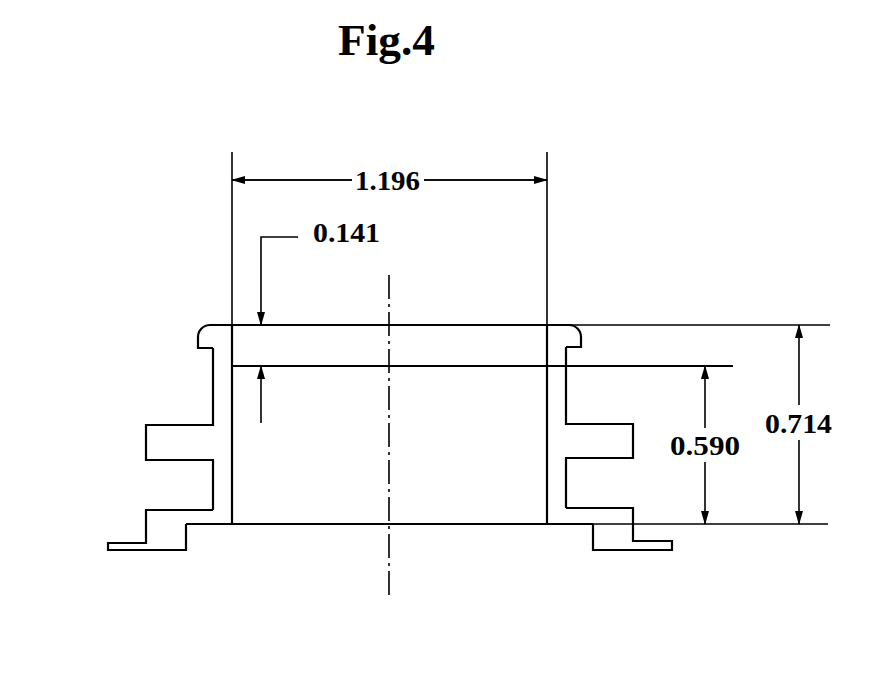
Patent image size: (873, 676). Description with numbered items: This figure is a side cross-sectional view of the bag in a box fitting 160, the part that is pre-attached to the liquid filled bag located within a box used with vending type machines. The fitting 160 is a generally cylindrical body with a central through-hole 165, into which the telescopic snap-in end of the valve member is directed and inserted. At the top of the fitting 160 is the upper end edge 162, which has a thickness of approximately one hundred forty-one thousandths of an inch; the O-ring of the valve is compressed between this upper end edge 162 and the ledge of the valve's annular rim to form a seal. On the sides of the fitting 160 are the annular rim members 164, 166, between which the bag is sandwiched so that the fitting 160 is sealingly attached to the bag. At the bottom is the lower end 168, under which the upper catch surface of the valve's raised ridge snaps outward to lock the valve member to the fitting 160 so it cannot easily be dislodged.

The bag in a box fitting 160 is at (610, 218).
The upper end edge 162 is at (319, 315).
The annular rim member 164 is at (111, 429).
The through-hole 165 is at (389, 424).
The annular rim member 166 is at (390, 578).
The lower end 168 is at (389, 562).